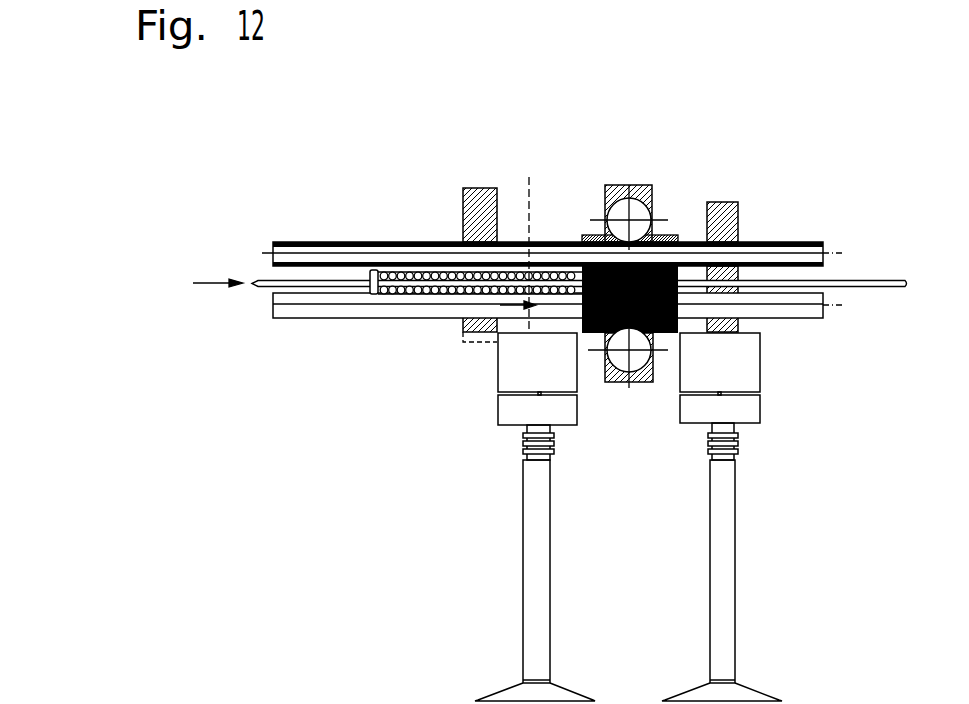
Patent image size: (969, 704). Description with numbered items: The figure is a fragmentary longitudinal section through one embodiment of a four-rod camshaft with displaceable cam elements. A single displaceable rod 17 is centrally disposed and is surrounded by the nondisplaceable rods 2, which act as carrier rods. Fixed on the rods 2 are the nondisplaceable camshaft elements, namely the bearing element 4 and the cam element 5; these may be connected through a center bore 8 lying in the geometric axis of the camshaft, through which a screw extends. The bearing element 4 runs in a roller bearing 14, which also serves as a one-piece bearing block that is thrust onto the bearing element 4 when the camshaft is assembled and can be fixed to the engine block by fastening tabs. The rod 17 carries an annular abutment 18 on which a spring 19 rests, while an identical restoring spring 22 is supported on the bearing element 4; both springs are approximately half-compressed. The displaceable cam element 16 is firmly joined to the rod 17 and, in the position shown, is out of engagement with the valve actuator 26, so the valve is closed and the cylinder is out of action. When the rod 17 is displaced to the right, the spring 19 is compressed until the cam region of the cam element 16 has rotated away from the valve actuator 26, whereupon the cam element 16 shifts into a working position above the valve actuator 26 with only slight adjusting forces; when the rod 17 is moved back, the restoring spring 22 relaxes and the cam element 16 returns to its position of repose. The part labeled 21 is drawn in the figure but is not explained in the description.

The guide bars 2 is at (343, 298).
The carrier block 4 is at (662, 235).
The stop block 5 is at (723, 223).
The lower guide bar 8 is at (740, 293).
The roller bearing 14 is at (628, 177).
The stop block 16 is at (476, 210).
The push rod 17 is at (267, 287).
The spring abutment 18 is at (379, 256).
The compression spring 19 is at (420, 295).
The slide block 21 is at (582, 265).
The spring end 22 is at (553, 265).
The valves 26 is at (567, 375).